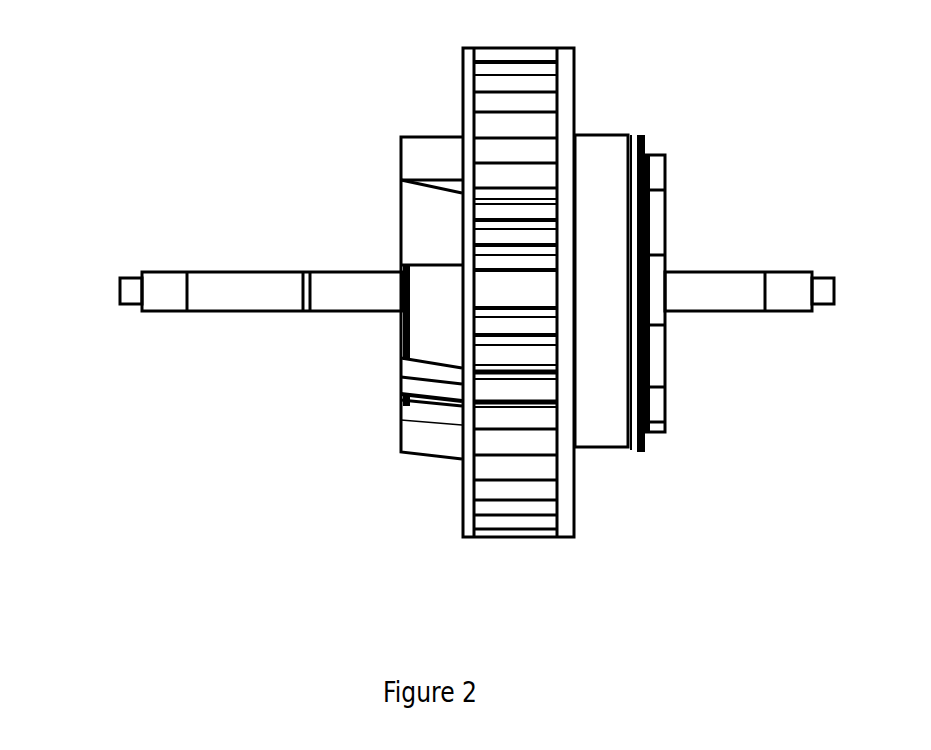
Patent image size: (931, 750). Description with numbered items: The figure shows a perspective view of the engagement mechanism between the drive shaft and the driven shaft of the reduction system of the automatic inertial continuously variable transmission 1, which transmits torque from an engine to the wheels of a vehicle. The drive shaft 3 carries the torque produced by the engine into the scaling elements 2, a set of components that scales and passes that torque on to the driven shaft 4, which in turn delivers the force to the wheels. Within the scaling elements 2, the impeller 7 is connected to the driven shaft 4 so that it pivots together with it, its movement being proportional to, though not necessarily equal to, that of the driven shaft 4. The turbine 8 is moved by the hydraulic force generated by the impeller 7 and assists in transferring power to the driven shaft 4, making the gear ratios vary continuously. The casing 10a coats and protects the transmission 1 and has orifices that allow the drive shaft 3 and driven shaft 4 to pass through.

The automatic inertial continuously variable transmission 1 is at (97, 295).
The scaling elements 2 is at (380, 201).
The drive shaft 3 is at (724, 272).
The driven shaft 4 is at (253, 311).
The impeller 7 is at (400, 425).
The turbine 8 is at (577, 503).
The casing 10a is at (665, 370).